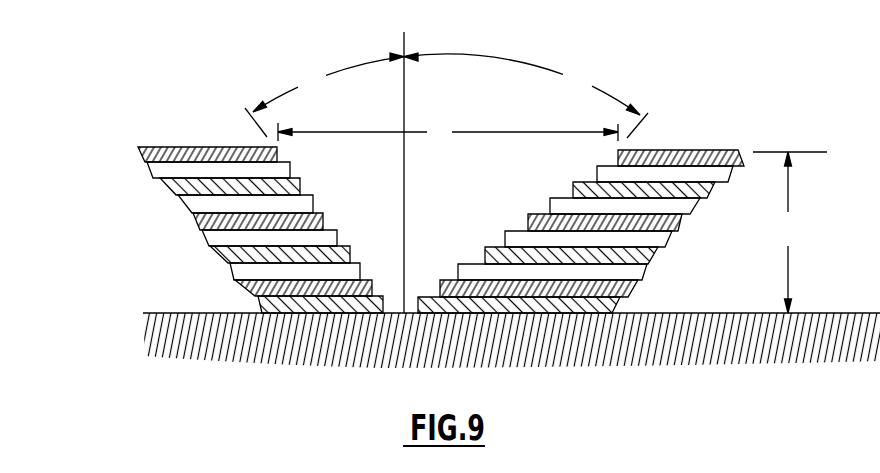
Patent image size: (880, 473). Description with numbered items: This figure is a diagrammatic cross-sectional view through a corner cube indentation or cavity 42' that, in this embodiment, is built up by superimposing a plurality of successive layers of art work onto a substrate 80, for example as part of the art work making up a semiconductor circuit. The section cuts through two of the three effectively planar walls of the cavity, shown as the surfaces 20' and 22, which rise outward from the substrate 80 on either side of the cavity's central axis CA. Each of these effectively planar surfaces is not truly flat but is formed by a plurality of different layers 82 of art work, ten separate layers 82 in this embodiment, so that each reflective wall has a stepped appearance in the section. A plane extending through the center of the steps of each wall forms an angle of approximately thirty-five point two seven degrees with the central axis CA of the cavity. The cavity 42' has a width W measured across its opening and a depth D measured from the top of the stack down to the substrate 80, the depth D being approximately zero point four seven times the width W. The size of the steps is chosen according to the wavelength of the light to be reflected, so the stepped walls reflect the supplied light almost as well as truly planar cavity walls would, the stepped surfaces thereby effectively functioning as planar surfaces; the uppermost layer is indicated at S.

The effectively planar surface 20' is at (235, 211).
The effectively planar surface 22 is at (558, 200).
The corner cube cavity 42' is at (448, 114).
The substrate 80 is at (160, 342).
The layers 82 is at (160, 189).
The top surface layer S is at (135, 133).
The central axis CA is at (407, 43).
The width W is at (492, 118).
The depth D is at (790, 232).